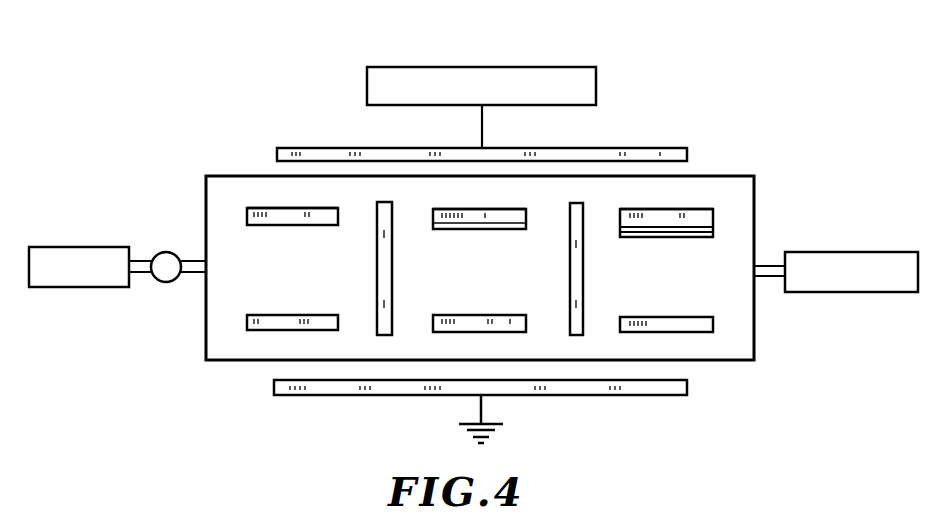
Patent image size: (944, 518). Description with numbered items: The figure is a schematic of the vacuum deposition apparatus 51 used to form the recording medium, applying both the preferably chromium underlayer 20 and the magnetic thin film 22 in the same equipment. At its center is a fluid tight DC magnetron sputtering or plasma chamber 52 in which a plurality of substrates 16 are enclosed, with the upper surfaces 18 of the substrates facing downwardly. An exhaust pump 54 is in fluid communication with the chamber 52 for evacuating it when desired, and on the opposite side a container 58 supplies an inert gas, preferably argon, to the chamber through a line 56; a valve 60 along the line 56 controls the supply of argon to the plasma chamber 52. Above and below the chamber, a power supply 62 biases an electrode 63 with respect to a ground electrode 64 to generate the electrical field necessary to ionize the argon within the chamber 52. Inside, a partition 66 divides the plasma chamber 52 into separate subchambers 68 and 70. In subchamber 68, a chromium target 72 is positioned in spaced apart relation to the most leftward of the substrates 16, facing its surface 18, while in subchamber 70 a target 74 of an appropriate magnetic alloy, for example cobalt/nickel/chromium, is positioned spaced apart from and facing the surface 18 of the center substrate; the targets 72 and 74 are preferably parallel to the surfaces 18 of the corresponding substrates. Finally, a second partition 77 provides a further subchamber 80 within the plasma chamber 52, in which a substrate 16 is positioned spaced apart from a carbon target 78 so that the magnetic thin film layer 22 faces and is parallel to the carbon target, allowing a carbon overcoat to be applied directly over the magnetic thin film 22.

The deposition apparatus 51 is at (322, 74).
The plasma chamber 52 is at (719, 177).
The exhaust pump 54 is at (857, 252).
The line 56 is at (143, 261).
The container 58 is at (84, 247).
The valve 60 is at (168, 282).
The power supply 62 is at (496, 67).
The electrode 63 is at (648, 148).
The ground electrode 64 is at (659, 393).
The substrates 16 is at (318, 212).
The upper surfaces 18 is at (285, 225).
The underlayer 20 is at (487, 230).
The magnetic thin film 22 is at (685, 237).
The partition 66 is at (386, 270).
The partition 77 is at (578, 270).
The subchamber 68 is at (208, 326).
The subchamber 70 is at (534, 360).
The subchamber 80 is at (724, 360).
The chromium target 72 is at (268, 321).
The target 74 is at (500, 321).
The carbon target 78 is at (692, 321).